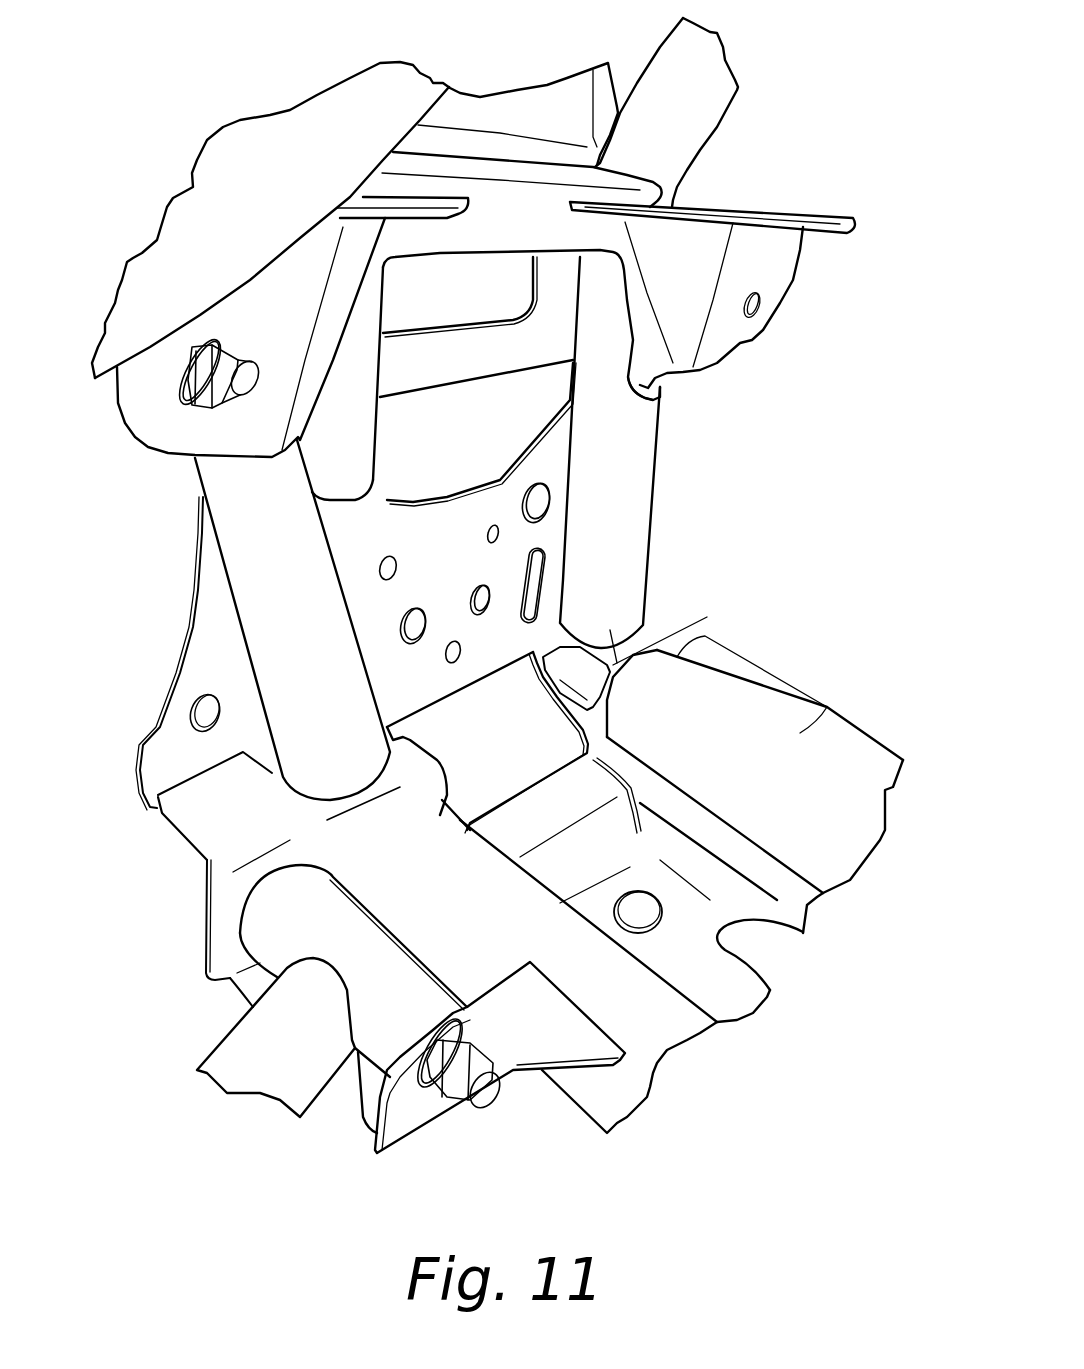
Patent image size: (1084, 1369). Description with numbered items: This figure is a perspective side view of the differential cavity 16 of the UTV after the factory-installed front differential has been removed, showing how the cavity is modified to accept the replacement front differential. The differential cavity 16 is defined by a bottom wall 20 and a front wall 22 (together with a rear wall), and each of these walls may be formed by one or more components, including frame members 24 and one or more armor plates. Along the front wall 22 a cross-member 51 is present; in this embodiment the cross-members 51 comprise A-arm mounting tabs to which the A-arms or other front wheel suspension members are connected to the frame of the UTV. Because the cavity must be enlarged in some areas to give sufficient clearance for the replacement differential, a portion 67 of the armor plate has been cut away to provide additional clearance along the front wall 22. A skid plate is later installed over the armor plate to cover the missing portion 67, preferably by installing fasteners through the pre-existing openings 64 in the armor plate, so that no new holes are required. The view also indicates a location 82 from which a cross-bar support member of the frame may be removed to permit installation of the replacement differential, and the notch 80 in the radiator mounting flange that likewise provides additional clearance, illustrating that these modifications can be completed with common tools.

The differential cavity 16 is at (835, 652).
The bottom wall 20 is at (525, 787).
The front wall 22 is at (403, 497).
The frame members 24 is at (647, 520).
The cross-member 51 is at (153, 457).
The pre-existing openings 64 is at (397, 563).
The portion of the armor plate 67 is at (497, 732).
The notch 80 is at (650, 208).
The location 82 is at (653, 400).